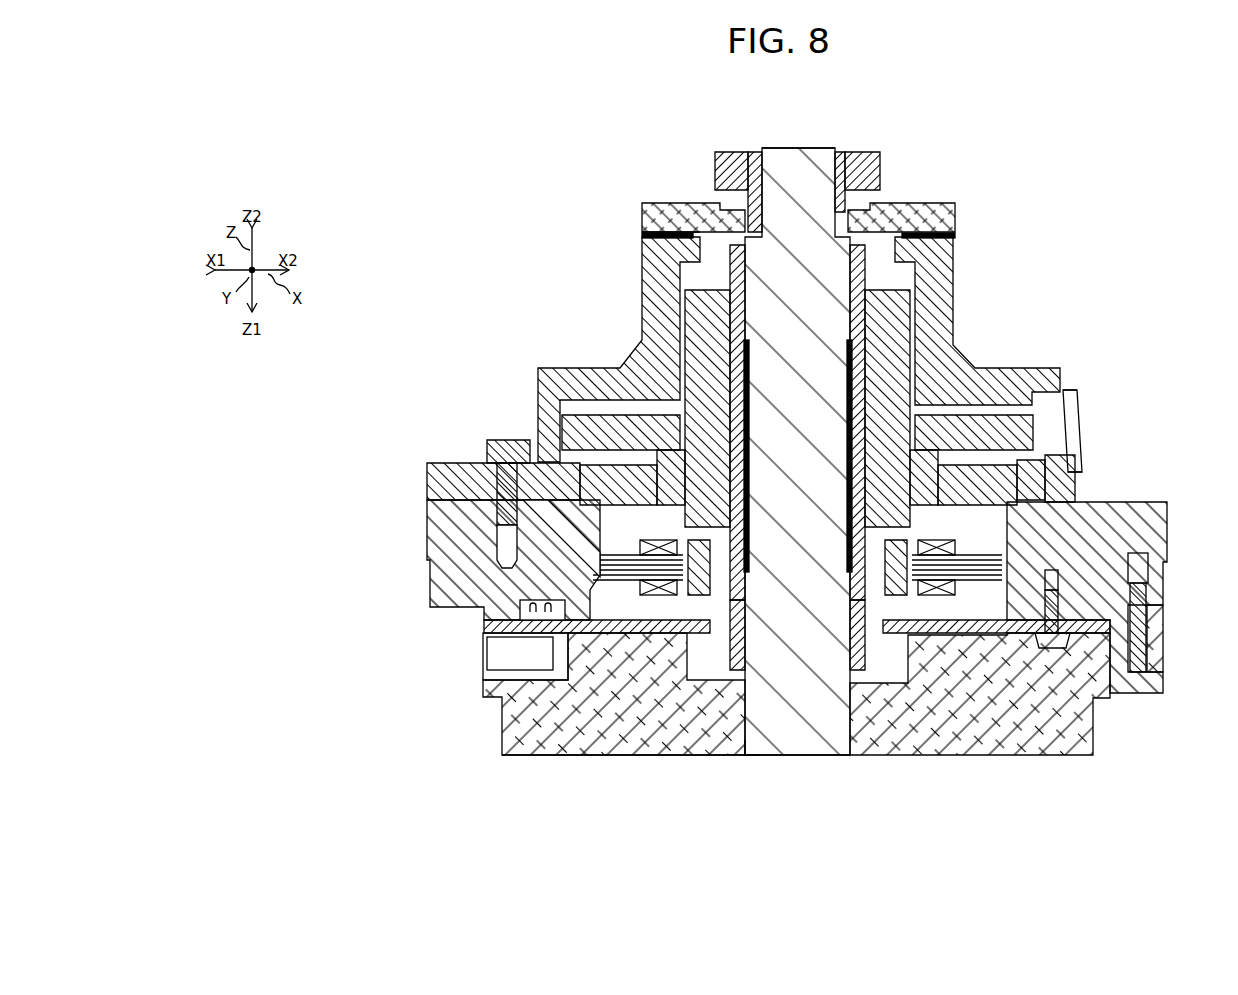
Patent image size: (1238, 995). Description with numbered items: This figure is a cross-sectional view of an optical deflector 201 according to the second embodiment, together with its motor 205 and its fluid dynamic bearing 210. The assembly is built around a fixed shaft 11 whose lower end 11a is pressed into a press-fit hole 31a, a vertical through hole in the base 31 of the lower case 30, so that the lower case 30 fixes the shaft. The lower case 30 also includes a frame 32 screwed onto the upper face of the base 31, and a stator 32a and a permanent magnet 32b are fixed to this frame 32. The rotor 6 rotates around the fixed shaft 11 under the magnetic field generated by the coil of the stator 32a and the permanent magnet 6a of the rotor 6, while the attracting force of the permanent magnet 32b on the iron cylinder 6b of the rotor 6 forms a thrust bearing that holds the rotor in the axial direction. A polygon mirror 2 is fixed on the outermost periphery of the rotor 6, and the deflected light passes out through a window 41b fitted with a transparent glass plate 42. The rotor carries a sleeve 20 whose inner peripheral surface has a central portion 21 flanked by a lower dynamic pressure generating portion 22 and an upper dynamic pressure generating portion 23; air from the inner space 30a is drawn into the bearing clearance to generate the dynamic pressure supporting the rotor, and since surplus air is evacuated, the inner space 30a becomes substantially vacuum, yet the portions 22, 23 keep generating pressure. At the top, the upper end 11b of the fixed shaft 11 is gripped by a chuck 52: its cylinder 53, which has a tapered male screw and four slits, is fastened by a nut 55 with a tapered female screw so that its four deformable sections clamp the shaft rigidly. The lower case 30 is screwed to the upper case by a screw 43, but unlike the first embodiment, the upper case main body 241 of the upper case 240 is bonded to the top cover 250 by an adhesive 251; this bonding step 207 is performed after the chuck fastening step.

The optical deflector 201 is at (480, 110).
The motor 205 is at (485, 150).
The bearing 210 is at (522, 192).
The top cover 250 is at (632, 157).
The chuck 52 is at (748, 152).
The cylinder 53 is at (746, 162).
The nut 55 is at (860, 155).
The upper end 11b is at (804, 170).
The fixed shaft 11 is at (812, 710).
The lower end 11a is at (779, 718).
The adhesive 251 is at (648, 232).
The bonding step 207 is at (630, 234).
The upper case 240 is at (490, 272).
The upper case main body 241 is at (585, 357).
The sleeve 20 is at (870, 277).
The dynamic pressure generating portion 23 is at (858, 303).
The central portion 21 is at (858, 388).
The dynamic pressure generating portion 22 is at (863, 630).
The rotor 6 is at (975, 428).
The iron cylinder 6b is at (1020, 405).
The permanent magnet 6a is at (950, 590).
The frame 32 is at (440, 612).
The stator 32a is at (997, 620).
The permanent magnet 32b is at (1045, 445).
The screw 43 is at (497, 445).
The window 41b is at (1076, 433).
The transparent glass plate 42 is at (1080, 463).
The polygon mirror 2 is at (1085, 415).
The lower case 30 is at (455, 722).
The inner space 30a is at (660, 603).
The base 31 is at (579, 760).
The press-fit hole 31a is at (745, 752).